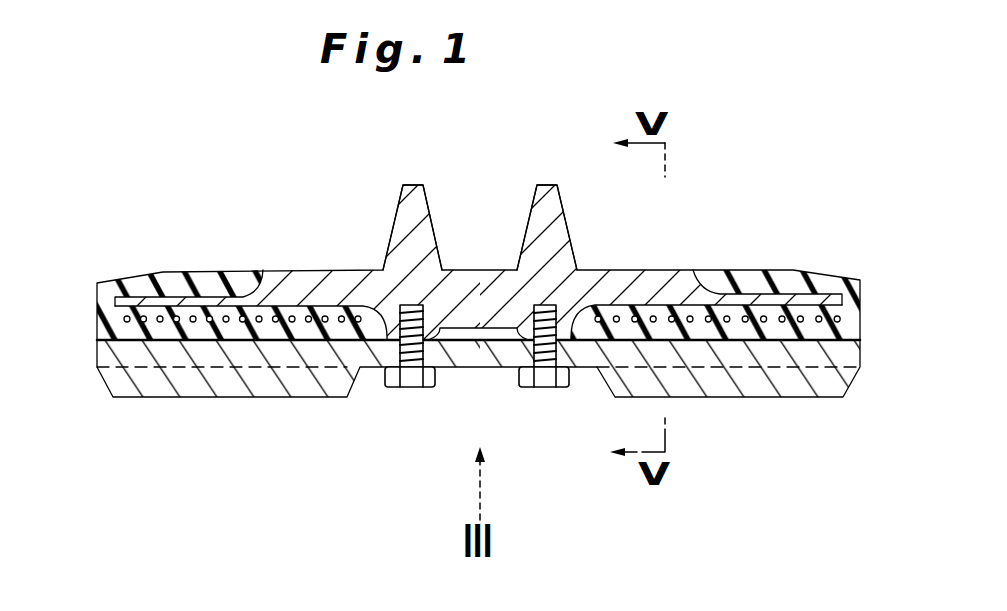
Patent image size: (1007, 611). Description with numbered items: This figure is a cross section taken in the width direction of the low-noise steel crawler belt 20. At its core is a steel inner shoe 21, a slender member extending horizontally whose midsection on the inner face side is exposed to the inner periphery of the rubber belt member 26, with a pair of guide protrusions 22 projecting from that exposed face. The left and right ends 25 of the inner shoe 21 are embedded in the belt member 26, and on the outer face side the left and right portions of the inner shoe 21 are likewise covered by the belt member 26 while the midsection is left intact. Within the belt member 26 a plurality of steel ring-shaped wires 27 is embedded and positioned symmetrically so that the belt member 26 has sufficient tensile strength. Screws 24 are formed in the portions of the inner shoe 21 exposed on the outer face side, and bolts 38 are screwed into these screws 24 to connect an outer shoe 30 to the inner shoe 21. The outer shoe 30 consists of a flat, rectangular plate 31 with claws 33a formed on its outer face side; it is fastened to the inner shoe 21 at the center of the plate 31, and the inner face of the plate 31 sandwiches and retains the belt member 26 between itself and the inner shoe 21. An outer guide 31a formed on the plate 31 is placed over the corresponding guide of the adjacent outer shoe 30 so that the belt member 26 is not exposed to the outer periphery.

The crawler belt 20 is at (478, 293).
The inner shoe 21 is at (328, 268).
The guide protrusion 22 is at (413, 183).
The screw 24 is at (436, 332).
The left and right ends 25 is at (192, 296).
The belt member 26 is at (105, 332).
The ring-shaped wire 27 is at (256, 316).
The outer shoe 30 is at (310, 402).
The plate 31 is at (853, 352).
The outer guide 31a is at (512, 352).
The claw 33a is at (228, 392).
The bolt 38 is at (407, 388).